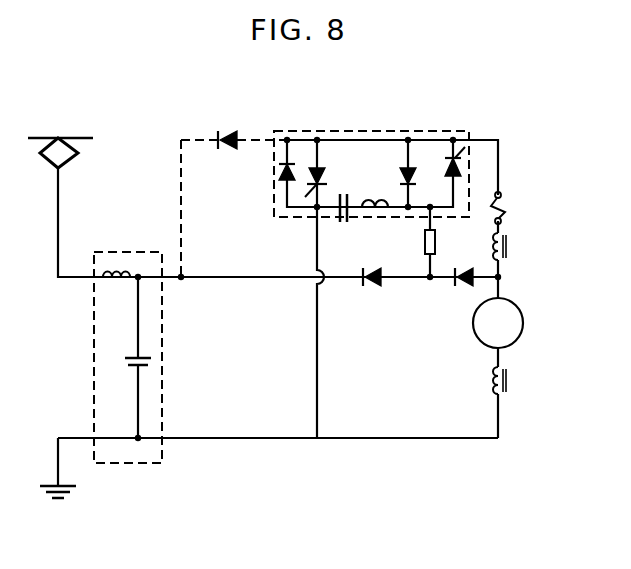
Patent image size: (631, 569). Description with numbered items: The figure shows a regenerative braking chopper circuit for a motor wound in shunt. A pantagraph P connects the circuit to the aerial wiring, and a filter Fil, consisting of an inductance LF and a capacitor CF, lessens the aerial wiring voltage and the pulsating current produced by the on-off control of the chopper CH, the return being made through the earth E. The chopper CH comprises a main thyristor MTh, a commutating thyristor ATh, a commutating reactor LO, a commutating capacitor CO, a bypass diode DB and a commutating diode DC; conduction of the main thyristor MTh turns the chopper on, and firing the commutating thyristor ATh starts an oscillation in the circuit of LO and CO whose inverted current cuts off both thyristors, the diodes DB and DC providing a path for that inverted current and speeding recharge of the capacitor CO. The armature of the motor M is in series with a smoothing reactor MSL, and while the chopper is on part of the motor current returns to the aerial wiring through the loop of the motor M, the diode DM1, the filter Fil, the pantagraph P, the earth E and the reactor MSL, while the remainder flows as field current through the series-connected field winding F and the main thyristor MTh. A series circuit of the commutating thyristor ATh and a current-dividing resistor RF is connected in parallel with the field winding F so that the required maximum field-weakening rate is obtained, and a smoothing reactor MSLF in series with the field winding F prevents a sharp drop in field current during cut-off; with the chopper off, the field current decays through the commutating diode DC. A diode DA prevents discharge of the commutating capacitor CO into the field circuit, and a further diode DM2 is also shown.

The pantagraph P is at (52, 170).
The filter Fil is at (132, 243).
The inductance LF is at (117, 286).
The capacitor CF is at (137, 369).
The earth E is at (47, 493).
The free-wheeling diode DM2 is at (192, 140).
The chopper CH is at (375, 130).
The bypass diode DB is at (293, 160).
The main thyristor MTh is at (320, 166).
The commutating capacitor CO is at (343, 224).
The commutating reactor LO is at (376, 216).
The commutating diode DC is at (408, 165).
The commutating thyristor ATh is at (453, 157).
The current-dividing resistor RF is at (437, 242).
The series-connected field winding F is at (508, 200).
The smoothing reactor MSLF is at (510, 247).
The diode DM1 is at (372, 287).
The diode DA is at (465, 289).
The armature of the motor M is at (498, 323).
The smoothing reactor MSL is at (510, 380).